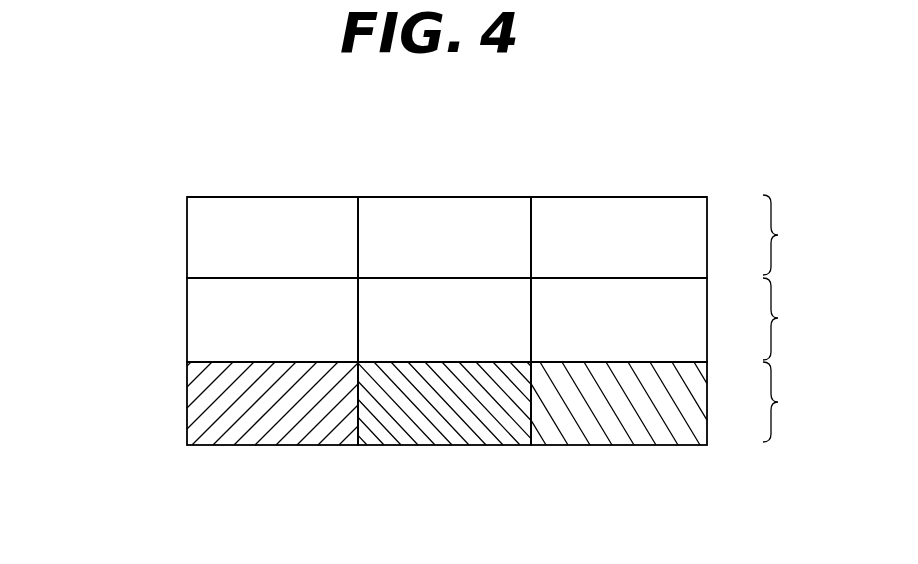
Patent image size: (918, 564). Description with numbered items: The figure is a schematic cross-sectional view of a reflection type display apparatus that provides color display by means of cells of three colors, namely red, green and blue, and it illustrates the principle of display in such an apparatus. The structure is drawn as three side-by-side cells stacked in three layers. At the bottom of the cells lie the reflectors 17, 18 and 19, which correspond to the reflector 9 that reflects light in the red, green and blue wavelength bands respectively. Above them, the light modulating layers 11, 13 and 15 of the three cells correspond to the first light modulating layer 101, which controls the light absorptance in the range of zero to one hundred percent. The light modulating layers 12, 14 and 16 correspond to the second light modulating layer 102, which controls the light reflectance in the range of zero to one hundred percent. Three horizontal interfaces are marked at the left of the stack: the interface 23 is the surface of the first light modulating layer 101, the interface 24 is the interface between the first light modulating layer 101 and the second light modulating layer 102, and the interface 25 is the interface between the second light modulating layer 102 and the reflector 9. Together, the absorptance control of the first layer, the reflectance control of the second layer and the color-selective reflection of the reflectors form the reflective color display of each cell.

The reflector 9 is at (492, 403).
The light modulating layer 11 is at (302, 222).
The light modulating layer 12 is at (227, 302).
The light modulating layer 13 is at (418, 222).
The light modulating layer 14 is at (493, 302).
The light modulating layer 15 is at (600, 222).
The light modulating layer 16 is at (665, 302).
The reflector 17 is at (275, 432).
The reflector 18 is at (447, 432).
The reflector 19 is at (625, 430).
The interface 23 is at (187, 198).
The interface 24 is at (187, 278).
The interface 25 is at (187, 362).
The first light modulating layer 101 is at (503, 236).
The second light modulating layer 102 is at (503, 320).